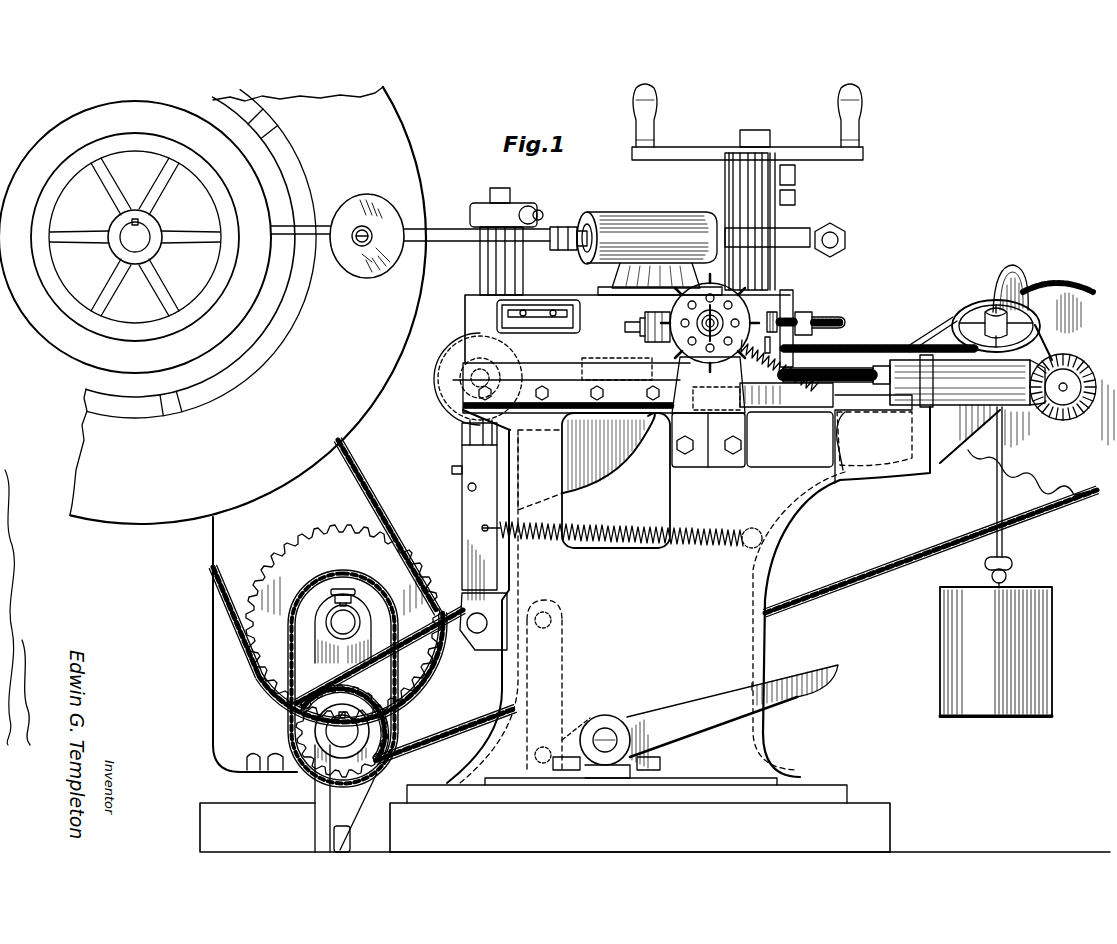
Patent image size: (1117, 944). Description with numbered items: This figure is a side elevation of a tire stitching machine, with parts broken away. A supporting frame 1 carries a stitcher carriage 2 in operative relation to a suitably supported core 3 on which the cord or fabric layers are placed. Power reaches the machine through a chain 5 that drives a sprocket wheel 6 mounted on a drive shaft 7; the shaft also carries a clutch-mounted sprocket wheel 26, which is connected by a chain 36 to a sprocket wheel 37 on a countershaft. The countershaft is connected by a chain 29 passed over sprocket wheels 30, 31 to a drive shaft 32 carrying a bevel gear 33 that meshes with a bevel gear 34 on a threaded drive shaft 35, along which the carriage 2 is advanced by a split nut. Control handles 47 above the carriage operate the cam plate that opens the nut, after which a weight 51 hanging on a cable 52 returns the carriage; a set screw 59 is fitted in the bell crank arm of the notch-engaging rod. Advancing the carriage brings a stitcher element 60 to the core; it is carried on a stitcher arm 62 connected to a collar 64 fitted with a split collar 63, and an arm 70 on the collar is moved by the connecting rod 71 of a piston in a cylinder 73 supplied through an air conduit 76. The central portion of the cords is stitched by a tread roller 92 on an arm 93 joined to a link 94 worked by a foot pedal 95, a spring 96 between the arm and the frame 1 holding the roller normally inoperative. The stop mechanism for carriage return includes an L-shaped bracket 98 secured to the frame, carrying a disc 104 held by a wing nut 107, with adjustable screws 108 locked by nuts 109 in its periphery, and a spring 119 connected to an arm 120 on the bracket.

The supporting frame 1 is at (740, 575).
The stitcher carriage 2 is at (621, 362).
The core 3 is at (83, 386).
The chain 5 is at (367, 482).
The sprocket wheel 6 is at (307, 550).
The drive shaft 7 is at (343, 622).
The sprocket wheel 26 is at (373, 600).
The chain 29 is at (852, 573).
The sprocket wheel 30 is at (400, 730).
The sprocket wheel 31 is at (1032, 472).
The drive shaft 32 is at (1068, 385).
The bevel gear 33 is at (1060, 360).
The bevel gear 34 is at (1040, 410).
The threaded drive shaft 35 is at (850, 370).
The chain 36 is at (288, 675).
The sprocket wheel 37 is at (292, 712).
The control handles 47 is at (650, 97).
The weight 51 is at (1052, 593).
The cable 52 is at (1004, 540).
The set screw 59 is at (830, 315).
The stitcher element 60 is at (360, 268).
The stitcher arm 62 is at (437, 243).
The split collar 63 is at (478, 205).
The collar 64 is at (520, 260).
The arm 70 is at (548, 232).
The connecting rod 71 is at (600, 210).
The cylinder 73 is at (655, 225).
The air conduit 76 is at (835, 230).
The tread roller 92 is at (450, 383).
The arm 93 is at (467, 528).
The link 94 is at (555, 680).
The foot pedal 95 is at (797, 690).
The spring 96 is at (623, 532).
The bracket 98 is at (748, 420).
The disc 104 is at (678, 342).
The wing nut 107 is at (735, 365).
The adjustable screws 108 is at (790, 296).
The nuts 109 is at (770, 300).
The spring 119 is at (840, 430).
The arm 120 is at (837, 403).